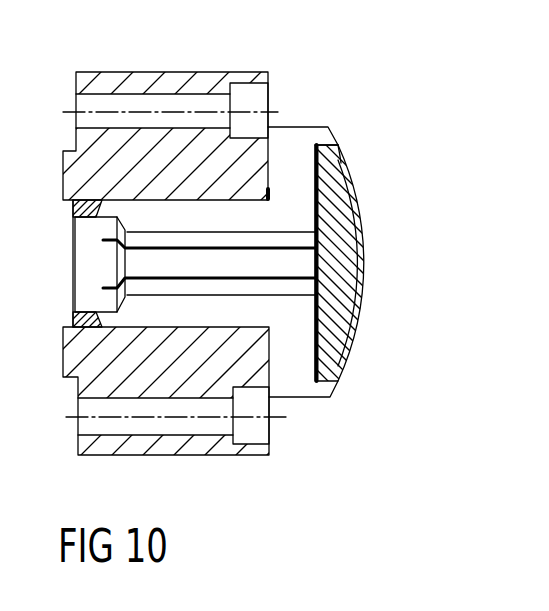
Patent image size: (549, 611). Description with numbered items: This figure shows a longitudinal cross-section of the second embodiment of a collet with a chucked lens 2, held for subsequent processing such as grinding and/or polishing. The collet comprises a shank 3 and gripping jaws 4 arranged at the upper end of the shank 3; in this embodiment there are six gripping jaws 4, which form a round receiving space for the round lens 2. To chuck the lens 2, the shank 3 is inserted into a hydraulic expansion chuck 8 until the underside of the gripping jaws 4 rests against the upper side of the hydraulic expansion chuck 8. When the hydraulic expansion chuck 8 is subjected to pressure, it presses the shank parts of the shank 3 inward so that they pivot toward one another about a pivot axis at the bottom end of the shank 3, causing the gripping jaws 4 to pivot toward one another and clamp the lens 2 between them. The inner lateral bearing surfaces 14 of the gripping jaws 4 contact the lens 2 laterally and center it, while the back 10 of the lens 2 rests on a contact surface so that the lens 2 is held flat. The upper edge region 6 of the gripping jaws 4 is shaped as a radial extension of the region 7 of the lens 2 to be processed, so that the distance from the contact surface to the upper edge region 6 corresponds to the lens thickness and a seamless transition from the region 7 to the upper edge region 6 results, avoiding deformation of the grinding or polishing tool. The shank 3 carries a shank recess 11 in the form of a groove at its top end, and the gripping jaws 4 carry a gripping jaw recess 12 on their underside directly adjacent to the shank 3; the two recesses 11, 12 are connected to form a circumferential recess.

The lens 2 is at (355, 295).
The shank 3 is at (122, 207).
The gripping jaws 4 is at (305, 127).
The upper edge region 6 is at (338, 143).
The region to be processed 7 is at (358, 226).
The hydraulic expansion chuck 8 is at (178, 148).
The back 10 is at (315, 268).
The shank recess 11 is at (268, 185).
The gripping jaw recess 12 is at (268, 195).
The inner lateral bearing surfaces 14 is at (341, 156).